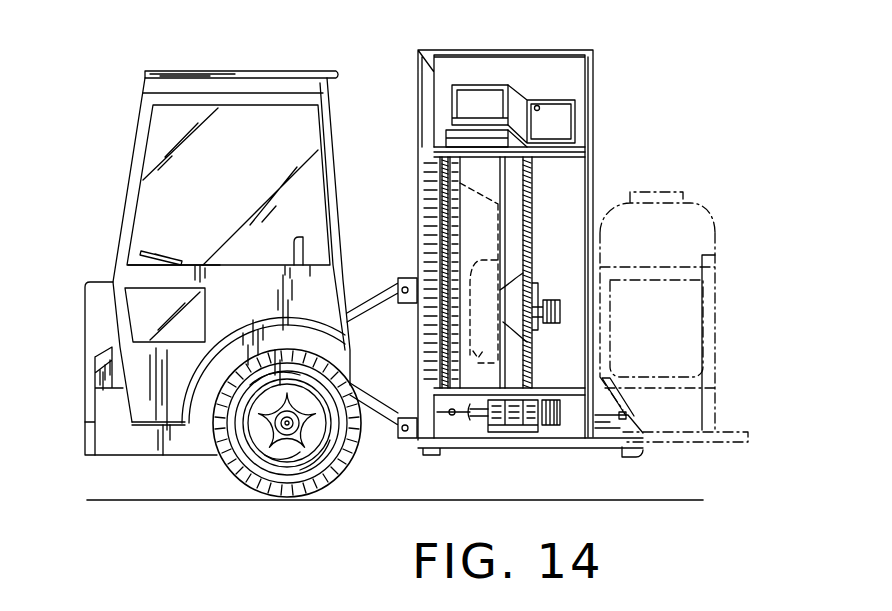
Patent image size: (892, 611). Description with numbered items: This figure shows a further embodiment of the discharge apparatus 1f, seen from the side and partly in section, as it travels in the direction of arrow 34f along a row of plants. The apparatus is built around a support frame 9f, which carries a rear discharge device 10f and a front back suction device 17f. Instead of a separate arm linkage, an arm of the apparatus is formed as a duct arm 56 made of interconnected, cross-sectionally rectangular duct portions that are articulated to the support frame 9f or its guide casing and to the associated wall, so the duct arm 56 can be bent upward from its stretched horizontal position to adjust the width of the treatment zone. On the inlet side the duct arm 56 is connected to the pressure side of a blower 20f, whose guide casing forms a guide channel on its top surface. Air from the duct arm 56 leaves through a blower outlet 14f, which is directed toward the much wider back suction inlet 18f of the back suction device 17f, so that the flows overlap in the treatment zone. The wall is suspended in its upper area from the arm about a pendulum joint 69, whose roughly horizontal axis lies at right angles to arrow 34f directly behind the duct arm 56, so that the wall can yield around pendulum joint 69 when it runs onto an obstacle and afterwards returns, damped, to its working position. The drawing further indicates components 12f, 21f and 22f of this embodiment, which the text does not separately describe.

The discharge apparatus 1f is at (630, 79).
The support frame 9f is at (422, 444).
The rear discharge device 10f is at (520, 154).
The drive motor 12f is at (513, 421).
The blower outlet 14f is at (520, 208).
The front back suction device 17f is at (439, 193).
The back suction inlet 18f is at (445, 257).
The blower 20f is at (493, 259).
The truck 21f is at (103, 277).
The drum 22f is at (704, 208).
The arrow 34f is at (168, 467).
The duct arm 56 is at (480, 85).
The pendulum joint 69 is at (537, 105).